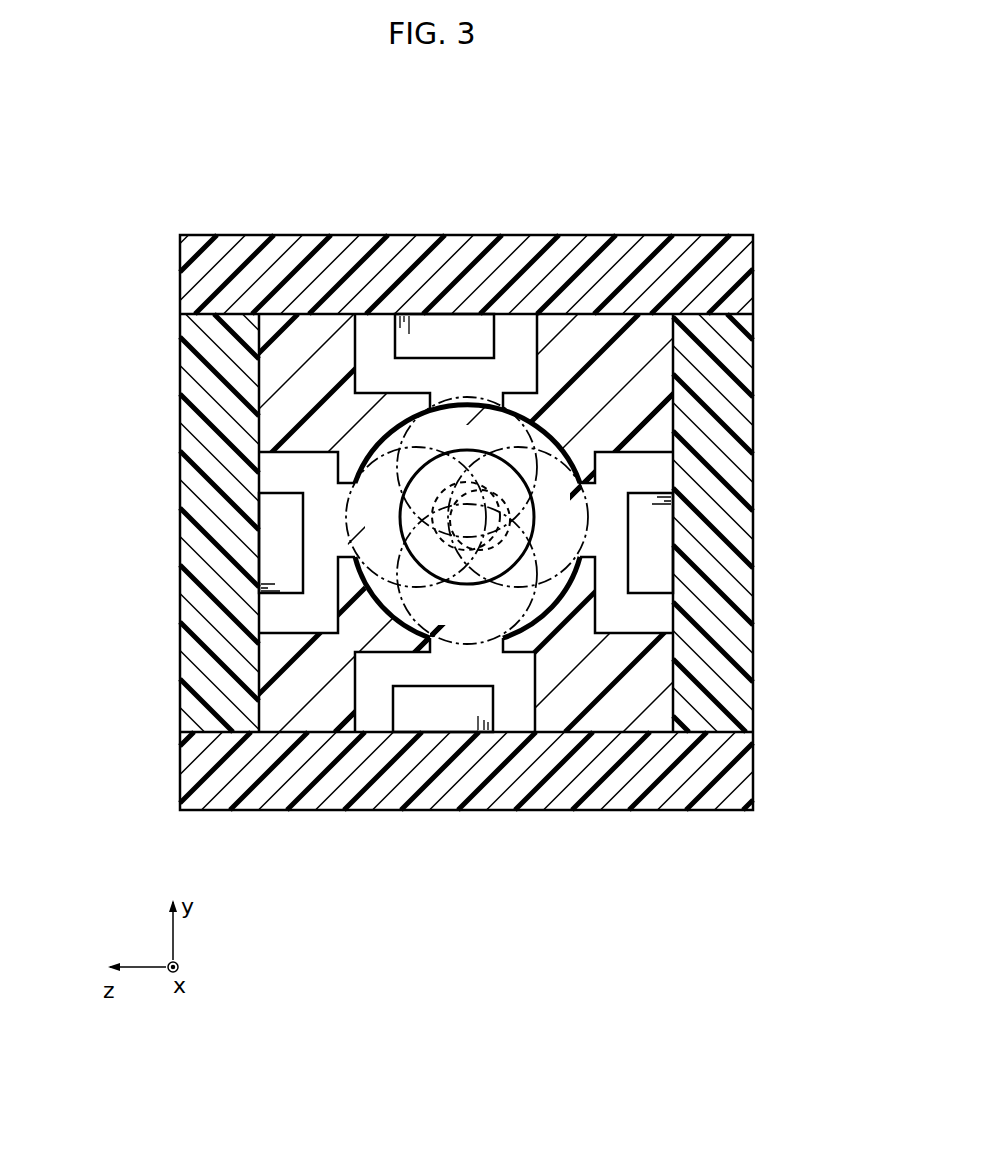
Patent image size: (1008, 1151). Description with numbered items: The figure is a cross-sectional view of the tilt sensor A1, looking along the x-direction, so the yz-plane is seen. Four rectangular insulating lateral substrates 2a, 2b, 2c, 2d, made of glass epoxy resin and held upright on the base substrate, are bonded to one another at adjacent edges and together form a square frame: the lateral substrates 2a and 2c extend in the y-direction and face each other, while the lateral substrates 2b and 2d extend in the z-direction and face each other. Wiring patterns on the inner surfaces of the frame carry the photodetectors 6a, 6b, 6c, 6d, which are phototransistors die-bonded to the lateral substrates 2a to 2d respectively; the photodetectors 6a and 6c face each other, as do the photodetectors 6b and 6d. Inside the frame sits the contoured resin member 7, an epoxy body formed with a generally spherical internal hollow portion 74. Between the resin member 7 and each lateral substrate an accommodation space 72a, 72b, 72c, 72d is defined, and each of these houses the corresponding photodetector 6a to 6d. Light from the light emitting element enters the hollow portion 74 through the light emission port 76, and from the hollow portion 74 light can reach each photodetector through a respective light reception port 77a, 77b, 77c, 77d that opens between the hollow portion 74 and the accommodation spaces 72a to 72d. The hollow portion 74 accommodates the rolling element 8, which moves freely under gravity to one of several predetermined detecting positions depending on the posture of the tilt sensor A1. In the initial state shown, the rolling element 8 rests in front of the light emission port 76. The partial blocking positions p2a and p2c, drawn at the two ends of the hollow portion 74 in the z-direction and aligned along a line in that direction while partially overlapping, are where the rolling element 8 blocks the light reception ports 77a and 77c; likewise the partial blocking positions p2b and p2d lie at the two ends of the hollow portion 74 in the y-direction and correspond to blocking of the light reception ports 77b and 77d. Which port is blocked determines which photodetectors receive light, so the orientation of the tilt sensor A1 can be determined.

The tilt sensor A1 is at (99, 144).
The lateral substrate 2a is at (233, 483).
The lateral substrate 2b is at (280, 305).
The lateral substrate 2c is at (723, 535).
The lateral substrate 2d is at (297, 785).
The photodetector 6a is at (272, 542).
The photodetector 6b is at (443, 334).
The photodetector 6c is at (660, 572).
The photodetector 6d is at (442, 713).
The contoured resin member 7 is at (608, 388).
The rolling element 8 is at (582, 413).
The accommodation space 72a is at (272, 612).
The accommodation space 72b is at (377, 332).
The accommodation space 72c is at (658, 623).
The accommodation space 72d is at (377, 713).
The hollow portion 74 is at (550, 593).
The light emission port 76 is at (450, 495).
The light reception port 77a is at (289, 513).
The light reception port 77b is at (467, 353).
The light reception port 77c is at (652, 517).
The light reception port 77d is at (467, 690).
The partial blocking position p2a is at (440, 492).
The partial blocking position p2b is at (510, 493).
The partial blocking position p2c is at (545, 451).
The partial blocking position p2d is at (505, 562).